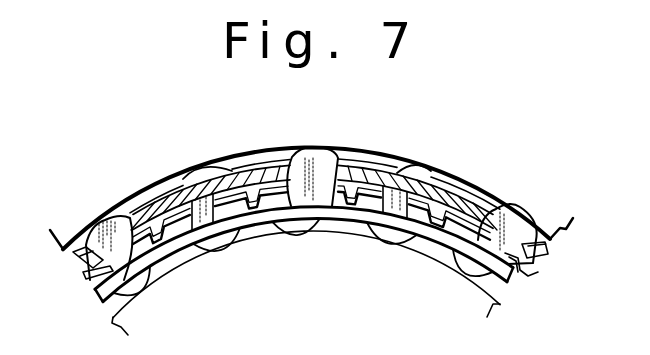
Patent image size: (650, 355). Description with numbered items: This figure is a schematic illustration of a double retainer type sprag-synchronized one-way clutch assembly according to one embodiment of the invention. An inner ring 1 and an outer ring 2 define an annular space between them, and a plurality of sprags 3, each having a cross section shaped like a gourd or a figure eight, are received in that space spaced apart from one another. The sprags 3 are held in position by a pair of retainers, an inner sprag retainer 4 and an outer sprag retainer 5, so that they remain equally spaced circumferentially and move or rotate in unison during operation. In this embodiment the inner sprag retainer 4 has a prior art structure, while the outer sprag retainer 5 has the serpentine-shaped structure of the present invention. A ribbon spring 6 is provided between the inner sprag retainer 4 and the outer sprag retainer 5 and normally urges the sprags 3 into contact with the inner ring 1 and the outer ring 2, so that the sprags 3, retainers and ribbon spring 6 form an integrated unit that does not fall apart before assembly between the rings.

The inner ring 1 is at (360, 250).
The outer ring 2 is at (500, 190).
The sprags 3 is at (388, 207).
The inner sprag retainer 4 is at (438, 234).
The outer sprag retainer 5 is at (453, 200).
The ribbon spring 6 is at (520, 273).